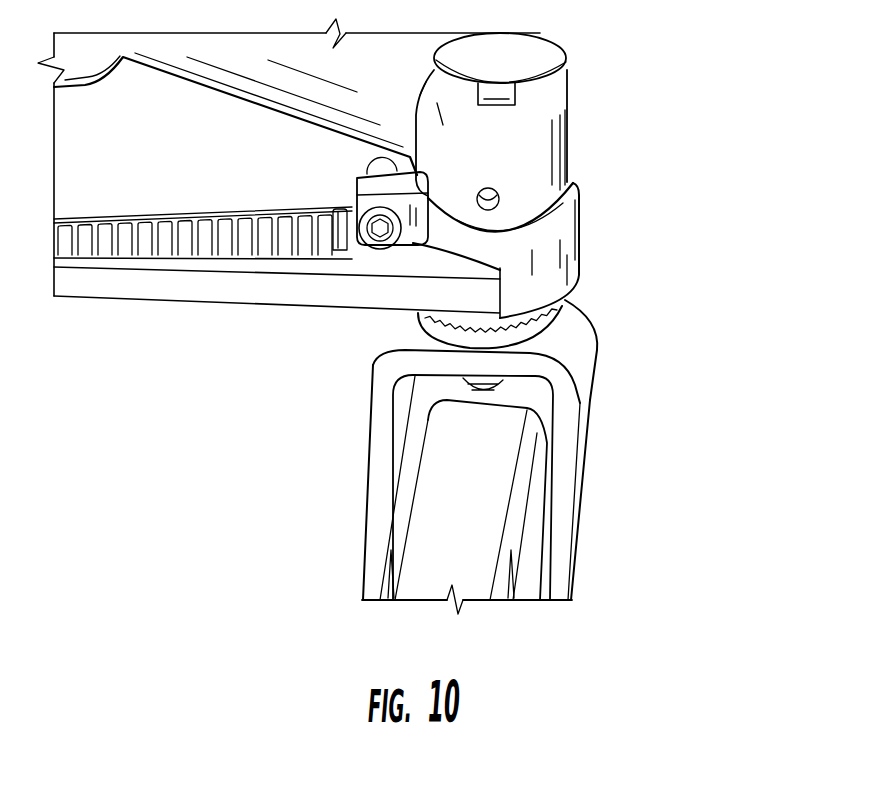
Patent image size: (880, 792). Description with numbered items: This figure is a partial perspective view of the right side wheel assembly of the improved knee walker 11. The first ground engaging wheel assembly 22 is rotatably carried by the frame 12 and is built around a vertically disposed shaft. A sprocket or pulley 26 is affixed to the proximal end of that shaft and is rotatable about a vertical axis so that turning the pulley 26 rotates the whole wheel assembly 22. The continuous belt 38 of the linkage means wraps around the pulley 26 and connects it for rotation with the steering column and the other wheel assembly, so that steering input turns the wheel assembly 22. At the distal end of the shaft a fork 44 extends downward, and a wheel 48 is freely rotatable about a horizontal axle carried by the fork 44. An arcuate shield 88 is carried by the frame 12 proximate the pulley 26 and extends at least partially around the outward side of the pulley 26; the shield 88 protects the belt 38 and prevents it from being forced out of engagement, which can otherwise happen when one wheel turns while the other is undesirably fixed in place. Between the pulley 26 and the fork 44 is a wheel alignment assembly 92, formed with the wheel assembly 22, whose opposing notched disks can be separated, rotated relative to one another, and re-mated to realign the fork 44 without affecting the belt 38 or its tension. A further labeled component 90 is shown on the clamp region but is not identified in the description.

The knee walker 11 is at (628, 95).
The frame 12 is at (345, 93).
The first ground engaging wheel assembly 22 is at (622, 333).
The pulley 26 is at (432, 262).
The continuous belt 38 is at (268, 290).
The fork 44 is at (573, 452).
The wheel 48 is at (432, 470).
The arcuate shield 88 is at (582, 243).
The clamp band 90 is at (568, 272).
The wheel alignment assembly 92 is at (548, 338).